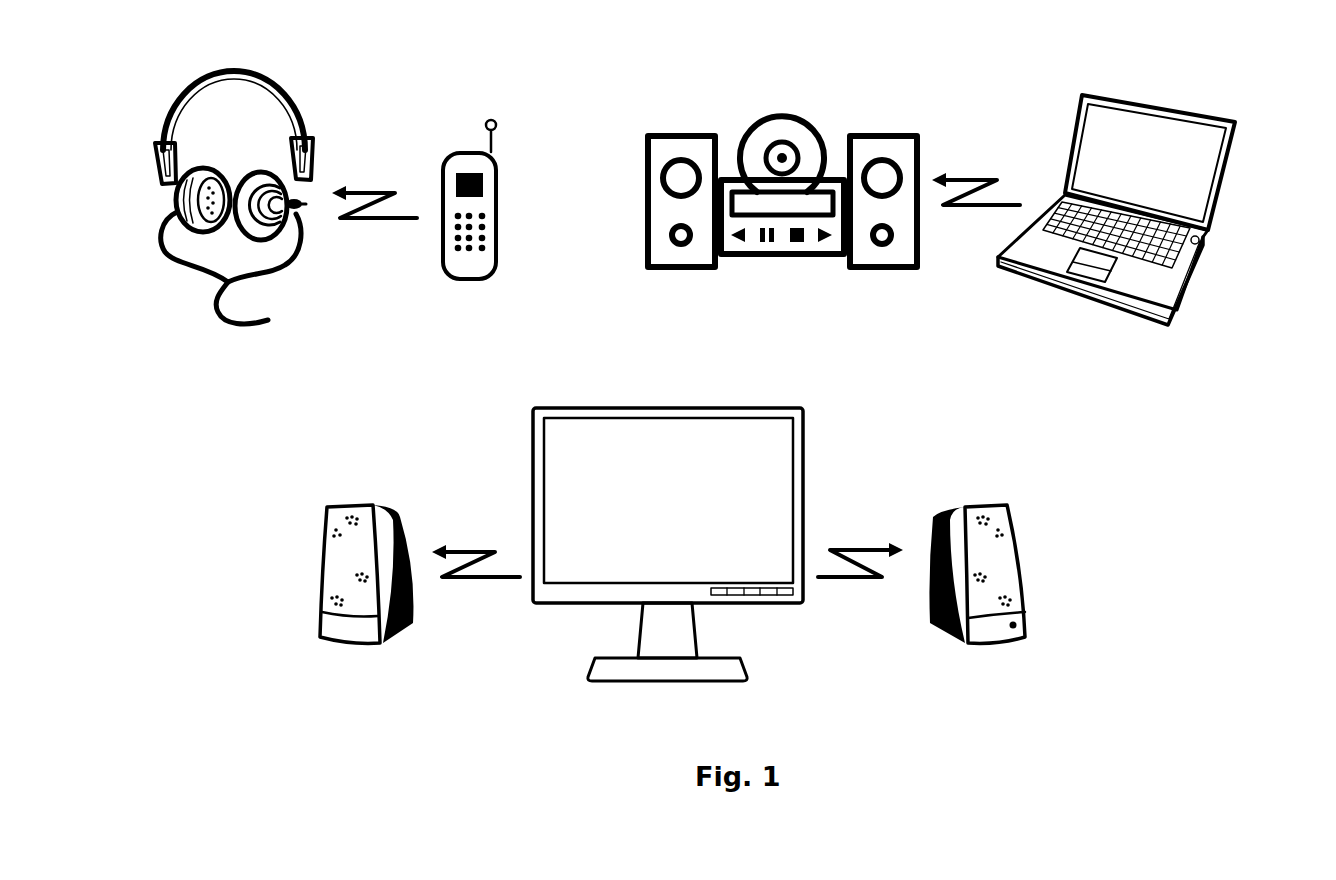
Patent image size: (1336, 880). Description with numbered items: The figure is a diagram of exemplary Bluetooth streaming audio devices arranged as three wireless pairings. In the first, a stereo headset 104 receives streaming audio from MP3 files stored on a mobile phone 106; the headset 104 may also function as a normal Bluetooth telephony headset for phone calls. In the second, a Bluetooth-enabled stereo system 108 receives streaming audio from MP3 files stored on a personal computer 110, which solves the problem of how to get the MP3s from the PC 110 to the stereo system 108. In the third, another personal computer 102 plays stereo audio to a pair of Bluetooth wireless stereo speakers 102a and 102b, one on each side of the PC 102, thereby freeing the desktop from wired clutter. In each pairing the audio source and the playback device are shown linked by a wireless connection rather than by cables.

The personal computer 102 is at (803, 430).
The stereo speaker 102a is at (327, 513).
The stereo speaker 102b is at (1013, 512).
The stereo headset 104 is at (303, 108).
The mobile phone 106 is at (497, 172).
The Bluetooth-enabled stereo system 108 is at (903, 133).
The personal computer 110 is at (1190, 288).